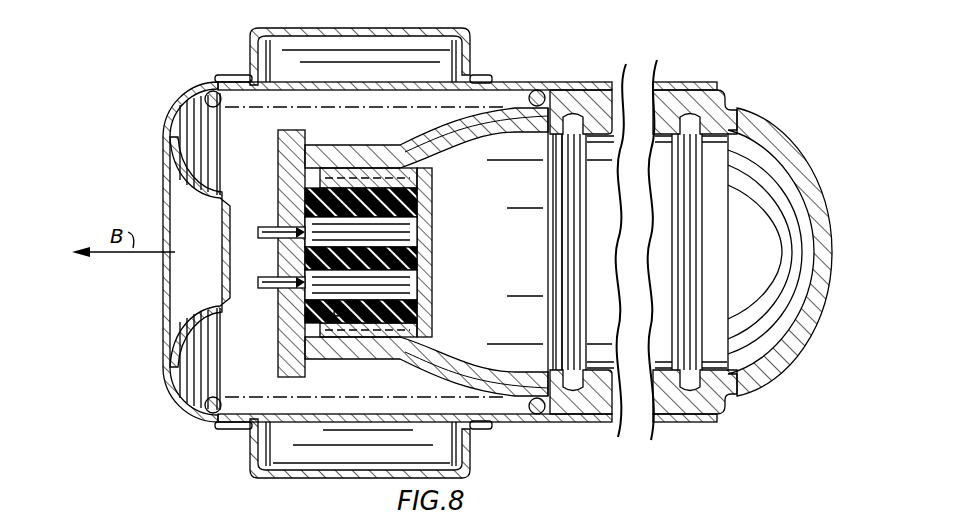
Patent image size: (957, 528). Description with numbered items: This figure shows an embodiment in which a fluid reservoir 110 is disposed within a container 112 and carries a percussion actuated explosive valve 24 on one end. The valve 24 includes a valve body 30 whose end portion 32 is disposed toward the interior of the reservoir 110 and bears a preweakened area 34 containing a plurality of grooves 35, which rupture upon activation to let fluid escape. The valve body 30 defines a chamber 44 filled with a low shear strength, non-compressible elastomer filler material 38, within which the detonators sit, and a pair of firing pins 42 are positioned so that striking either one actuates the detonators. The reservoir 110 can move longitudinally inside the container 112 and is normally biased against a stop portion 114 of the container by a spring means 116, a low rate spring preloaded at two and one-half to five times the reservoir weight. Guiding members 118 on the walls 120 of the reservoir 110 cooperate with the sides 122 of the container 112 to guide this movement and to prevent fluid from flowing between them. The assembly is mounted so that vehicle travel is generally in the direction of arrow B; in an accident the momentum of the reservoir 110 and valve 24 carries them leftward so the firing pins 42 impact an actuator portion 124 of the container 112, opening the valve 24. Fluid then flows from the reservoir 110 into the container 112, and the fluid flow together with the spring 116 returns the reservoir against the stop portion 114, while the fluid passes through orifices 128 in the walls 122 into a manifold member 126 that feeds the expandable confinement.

The percussion actuated explosive valve 24 is at (390, 252).
The valve body 30 is at (400, 176).
The end portion 32 is at (432, 324).
The preweakened area 34 is at (432, 226).
The grooves 35 is at (432, 254).
The filler material 38 is at (283, 205).
The firing pins 42 is at (258, 283).
The chamber 44 is at (335, 347).
The fluid reservoir 110 is at (822, 226).
The container 112 is at (560, 85).
The stop portion 114 is at (728, 90).
The spring means 116 is at (224, 78).
The guiding members 118 is at (606, 84).
The walls 120 is at (636, 424).
The sides 122 is at (492, 86).
The actuator portion 124 is at (222, 250).
The manifold member 126 is at (391, 30).
The orifices 128 is at (286, 64).